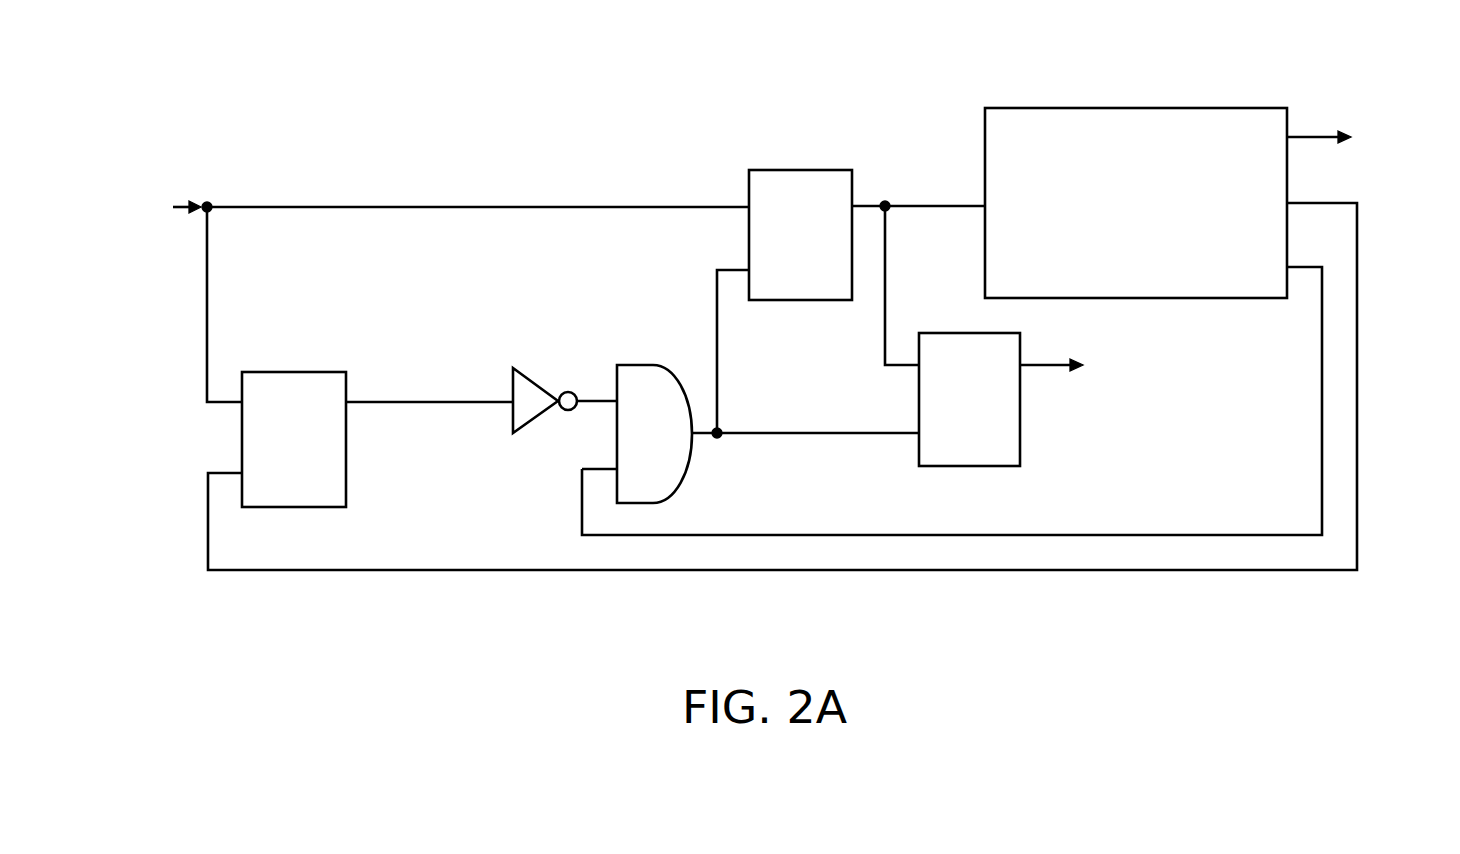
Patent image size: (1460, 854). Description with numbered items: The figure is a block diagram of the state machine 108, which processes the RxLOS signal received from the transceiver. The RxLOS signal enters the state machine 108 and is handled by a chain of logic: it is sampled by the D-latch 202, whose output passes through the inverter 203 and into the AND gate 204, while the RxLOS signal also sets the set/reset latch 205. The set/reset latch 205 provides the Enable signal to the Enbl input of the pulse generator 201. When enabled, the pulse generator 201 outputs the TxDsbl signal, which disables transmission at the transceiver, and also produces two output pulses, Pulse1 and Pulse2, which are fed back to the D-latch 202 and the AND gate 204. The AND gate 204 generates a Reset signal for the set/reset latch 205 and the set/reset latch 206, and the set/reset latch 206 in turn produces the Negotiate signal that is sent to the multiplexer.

The state machine 108 is at (725, 298).
The pulse generator 201 is at (1273, 108).
The D-latch 202 is at (278, 372).
The inverter 203 is at (523, 365).
The AND gate 204 is at (673, 490).
The set/reset latch 205 is at (749, 232).
The set/reset latch 206 is at (995, 466).